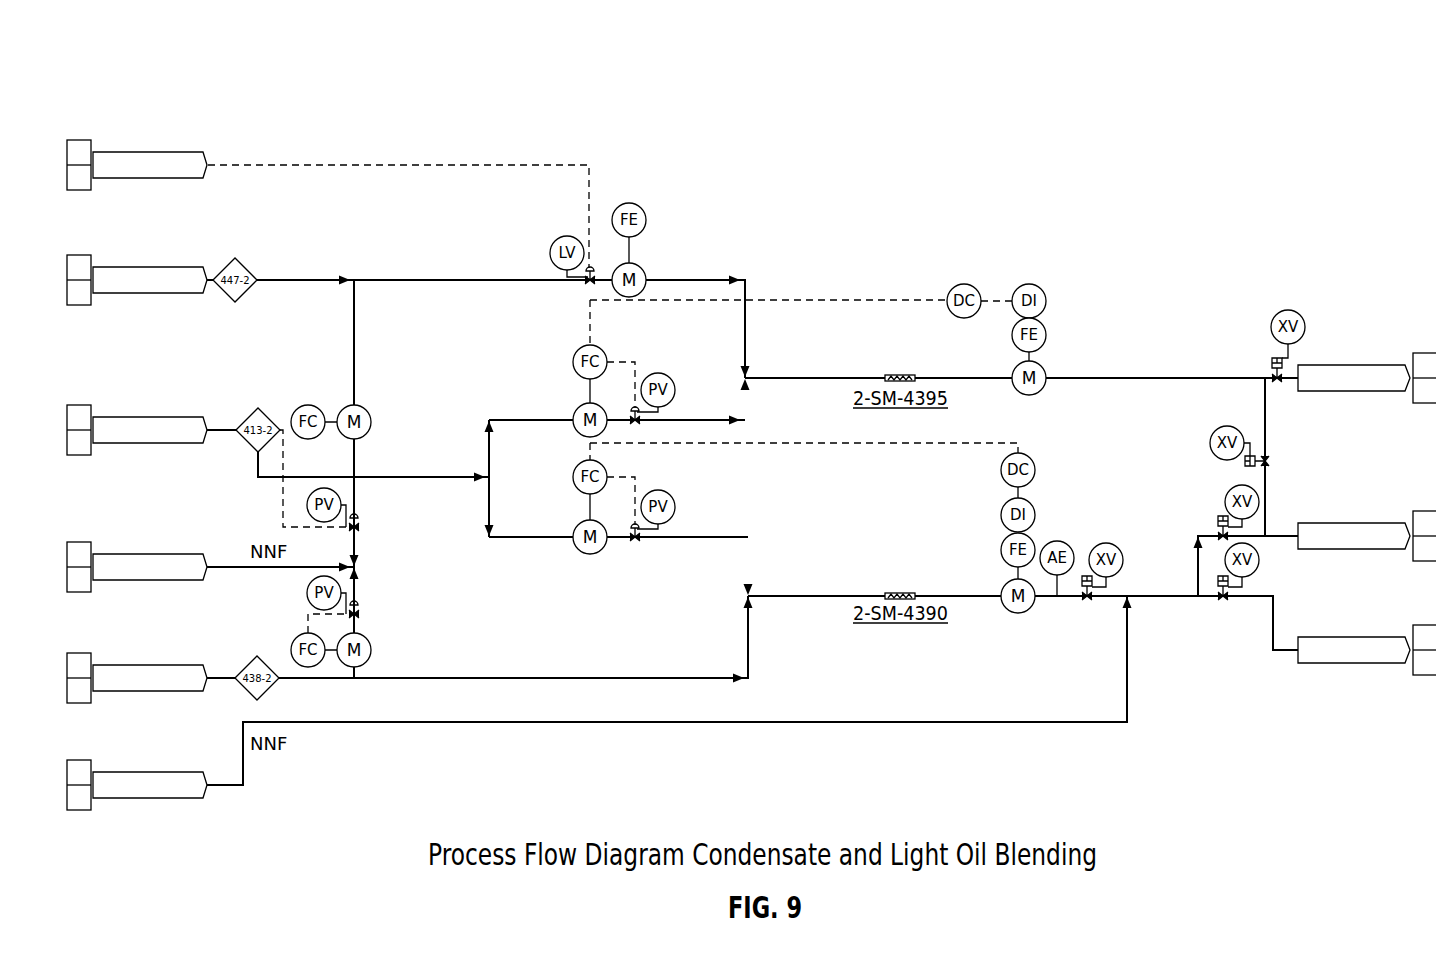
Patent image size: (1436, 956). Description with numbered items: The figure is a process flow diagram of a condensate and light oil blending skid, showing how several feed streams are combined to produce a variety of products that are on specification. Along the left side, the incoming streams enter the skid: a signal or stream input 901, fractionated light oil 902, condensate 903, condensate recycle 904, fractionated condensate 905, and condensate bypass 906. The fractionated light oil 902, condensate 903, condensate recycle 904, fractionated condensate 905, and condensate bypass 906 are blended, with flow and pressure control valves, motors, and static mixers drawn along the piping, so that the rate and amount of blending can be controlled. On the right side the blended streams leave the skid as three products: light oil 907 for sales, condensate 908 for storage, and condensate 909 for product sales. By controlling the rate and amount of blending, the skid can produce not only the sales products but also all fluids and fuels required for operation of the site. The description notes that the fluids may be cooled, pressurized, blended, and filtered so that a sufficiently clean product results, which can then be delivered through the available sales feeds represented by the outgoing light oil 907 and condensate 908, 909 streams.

The signal/stream input from sheet H-15 901 is at (148, 150).
The fractionated light oil 902 is at (148, 265).
The condensate 903 is at (148, 415).
The condensate recycle 904 is at (148, 550).
The fractionated condensate 905 is at (148, 663).
The condensate bypass 906 is at (148, 770).
The light oil 907 is at (1356, 363).
The condensate 908 is at (1356, 521).
The condensate 909 is at (1356, 635).